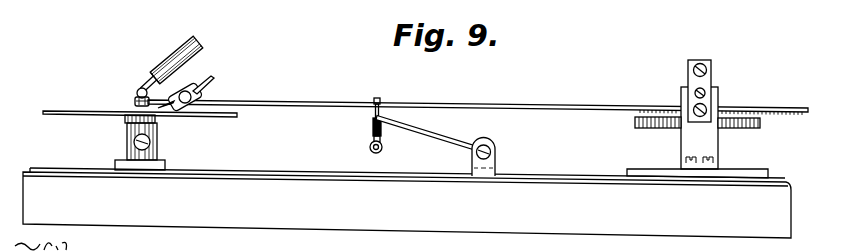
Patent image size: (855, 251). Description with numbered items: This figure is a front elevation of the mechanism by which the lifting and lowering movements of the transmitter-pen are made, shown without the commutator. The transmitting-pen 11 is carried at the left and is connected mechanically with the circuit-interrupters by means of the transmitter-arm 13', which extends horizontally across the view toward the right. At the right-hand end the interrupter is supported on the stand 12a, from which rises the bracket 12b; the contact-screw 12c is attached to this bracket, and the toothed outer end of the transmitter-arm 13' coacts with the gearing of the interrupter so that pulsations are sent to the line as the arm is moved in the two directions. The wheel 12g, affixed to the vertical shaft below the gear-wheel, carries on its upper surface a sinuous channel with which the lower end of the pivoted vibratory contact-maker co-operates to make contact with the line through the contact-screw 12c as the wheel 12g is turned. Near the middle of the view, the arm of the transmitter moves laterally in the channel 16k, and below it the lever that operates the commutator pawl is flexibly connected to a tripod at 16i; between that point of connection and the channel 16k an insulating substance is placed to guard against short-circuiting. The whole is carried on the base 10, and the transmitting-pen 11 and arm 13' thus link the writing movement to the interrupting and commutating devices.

The machine base frame 10 is at (340, 0).
The transmitting-pen 11 is at (212, 78).
The transmitter-arm 13' is at (478, 97).
The channel 16k is at (371, 103).
The tripod connection 16i is at (382, 150).
The stand 12a is at (732, 177).
The bracket 12b is at (699, 128).
The contact-screw 12c is at (708, 68).
The wheel 12g is at (637, 129).